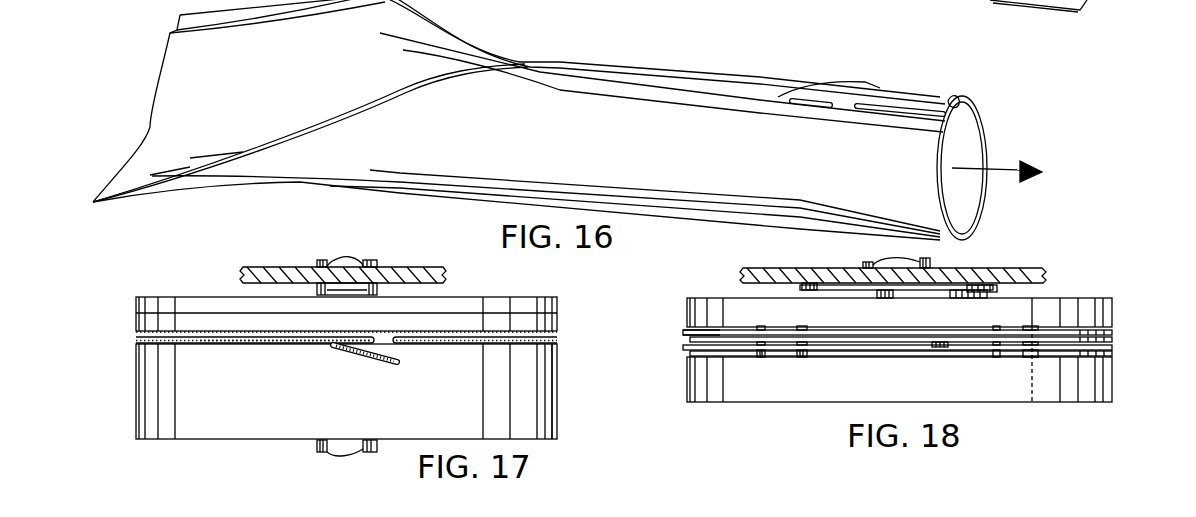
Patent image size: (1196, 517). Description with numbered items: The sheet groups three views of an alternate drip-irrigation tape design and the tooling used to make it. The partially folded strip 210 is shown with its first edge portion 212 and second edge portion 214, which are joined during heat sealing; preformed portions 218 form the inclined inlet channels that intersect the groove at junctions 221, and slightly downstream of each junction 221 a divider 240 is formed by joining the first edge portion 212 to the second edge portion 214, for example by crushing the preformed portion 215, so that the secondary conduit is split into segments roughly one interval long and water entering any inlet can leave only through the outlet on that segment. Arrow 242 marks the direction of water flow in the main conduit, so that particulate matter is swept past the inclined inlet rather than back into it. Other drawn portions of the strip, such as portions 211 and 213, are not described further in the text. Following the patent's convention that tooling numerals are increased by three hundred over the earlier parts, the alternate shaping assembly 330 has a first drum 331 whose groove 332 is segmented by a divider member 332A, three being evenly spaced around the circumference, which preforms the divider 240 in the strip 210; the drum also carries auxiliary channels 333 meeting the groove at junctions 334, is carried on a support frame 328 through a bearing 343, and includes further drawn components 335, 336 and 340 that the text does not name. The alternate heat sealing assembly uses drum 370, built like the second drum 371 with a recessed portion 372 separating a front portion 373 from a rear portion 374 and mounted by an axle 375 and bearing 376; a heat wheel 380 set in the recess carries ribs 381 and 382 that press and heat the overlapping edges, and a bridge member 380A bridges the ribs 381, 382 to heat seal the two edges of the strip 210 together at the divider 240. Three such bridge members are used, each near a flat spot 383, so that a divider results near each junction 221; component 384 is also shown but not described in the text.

In FIG. 16, the strip 210 is at (698, 62).
In FIG. 16, the tube wall 211 is at (913, 128).
In FIG. 16, the first edge portion 212 is at (172, 44).
In FIG. 16, the intermediate layer 213 is at (215, 172).
In FIG. 16, the second edge portion 214 is at (130, 175).
In FIG. 16, the preformed portion 215 is at (643, 85).
In FIG. 16, the preformed portions 218 is at (835, 83).
In FIG. 16, the junctions 221 is at (800, 100).
In FIG. 16, the divider 240 is at (838, 108).
In FIG. 16, the arrow 242 is at (1002, 178).
In FIG. 17, the support frame 328 is at (290, 273).
In FIG. 18, the support frame 328 is at (807, 273).
In FIG. 17, the shaping assembly 330 is at (226, 444).
In FIG. 17, the first drum 331 is at (550, 388).
In FIG. 17, the groove 332 is at (560, 340).
In FIG. 17, the divider member 332A is at (383, 342).
In FIG. 17, the auxiliary channels 333 is at (382, 362).
In FIG. 17, the junctions 334 is at (333, 343).
In FIG. 17, the liner layer 335 is at (255, 343).
In FIG. 17, the adhesive layer 336 is at (167, 332).
In FIG. 17, the upper block 340 is at (543, 308).
In FIG. 17, the bearing 343 is at (357, 263).
In FIG. 18, the drum 370 is at (782, 406).
In FIG. 18, the second drum 371 is at (1111, 372).
In FIG. 18, the recessed portion 372 is at (1108, 332).
In FIG. 18, the front portion 373 is at (1070, 393).
In FIG. 18, the rear portion 374 is at (1095, 308).
In FIG. 18, the axle 375 is at (898, 298).
In FIG. 18, the bearing 376 is at (928, 263).
In FIG. 18, the heat wheel 380 is at (812, 363).
In FIG. 18, the bridge member 380A is at (945, 347).
In FIG. 18, the rib 381 is at (685, 350).
In FIG. 18, the rib 382 is at (685, 332).
In FIG. 18, the flat spot 383 is at (897, 349).
In FIG. 18, the intermediate plate 384 is at (722, 334).